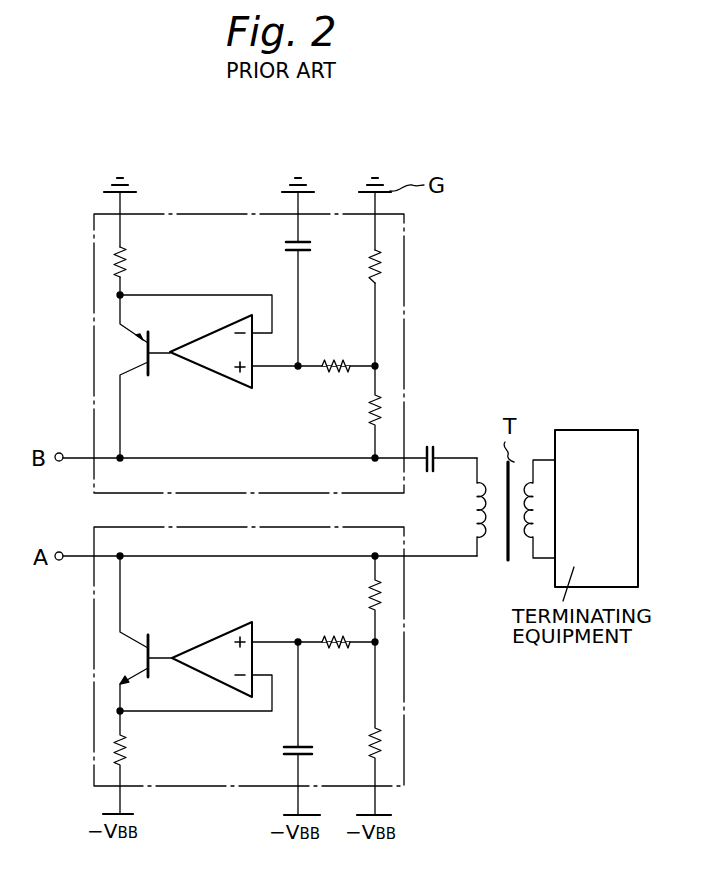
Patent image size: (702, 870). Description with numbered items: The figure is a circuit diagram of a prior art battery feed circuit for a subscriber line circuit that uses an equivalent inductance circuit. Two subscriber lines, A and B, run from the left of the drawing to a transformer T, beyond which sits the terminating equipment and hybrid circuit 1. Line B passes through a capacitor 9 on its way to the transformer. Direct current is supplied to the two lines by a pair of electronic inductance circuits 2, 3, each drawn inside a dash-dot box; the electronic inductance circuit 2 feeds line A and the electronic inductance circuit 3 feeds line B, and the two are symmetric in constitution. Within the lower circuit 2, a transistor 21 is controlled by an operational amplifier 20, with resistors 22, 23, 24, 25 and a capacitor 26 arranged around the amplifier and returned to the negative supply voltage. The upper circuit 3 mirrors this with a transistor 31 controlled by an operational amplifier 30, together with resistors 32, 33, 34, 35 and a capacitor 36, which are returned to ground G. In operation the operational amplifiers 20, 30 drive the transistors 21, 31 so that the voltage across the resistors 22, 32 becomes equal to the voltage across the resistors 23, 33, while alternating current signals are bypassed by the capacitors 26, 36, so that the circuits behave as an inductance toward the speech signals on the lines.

The terminating equipment and hybrid circuit 1 is at (594, 430).
The electronic inductance circuit 2 is at (405, 694).
The electronic inductance circuit 3 is at (405, 320).
The capacitor 9 is at (430, 444).
The operational amplifier 20 is at (218, 638).
The transistor 21 is at (140, 637).
The resistor 22 is at (380, 752).
The resistor 23 is at (380, 604).
The resistor 24 is at (337, 639).
The resistor 25 is at (128, 750).
The capacitor 26 is at (313, 748).
The operational amplifier 30 is at (212, 346).
The transistor 31 is at (135, 336).
The resistor 32 is at (380, 268).
The resistor 33 is at (380, 398).
The resistor 34 is at (333, 360).
The resistor 35 is at (128, 262).
The capacitor 36 is at (311, 243).